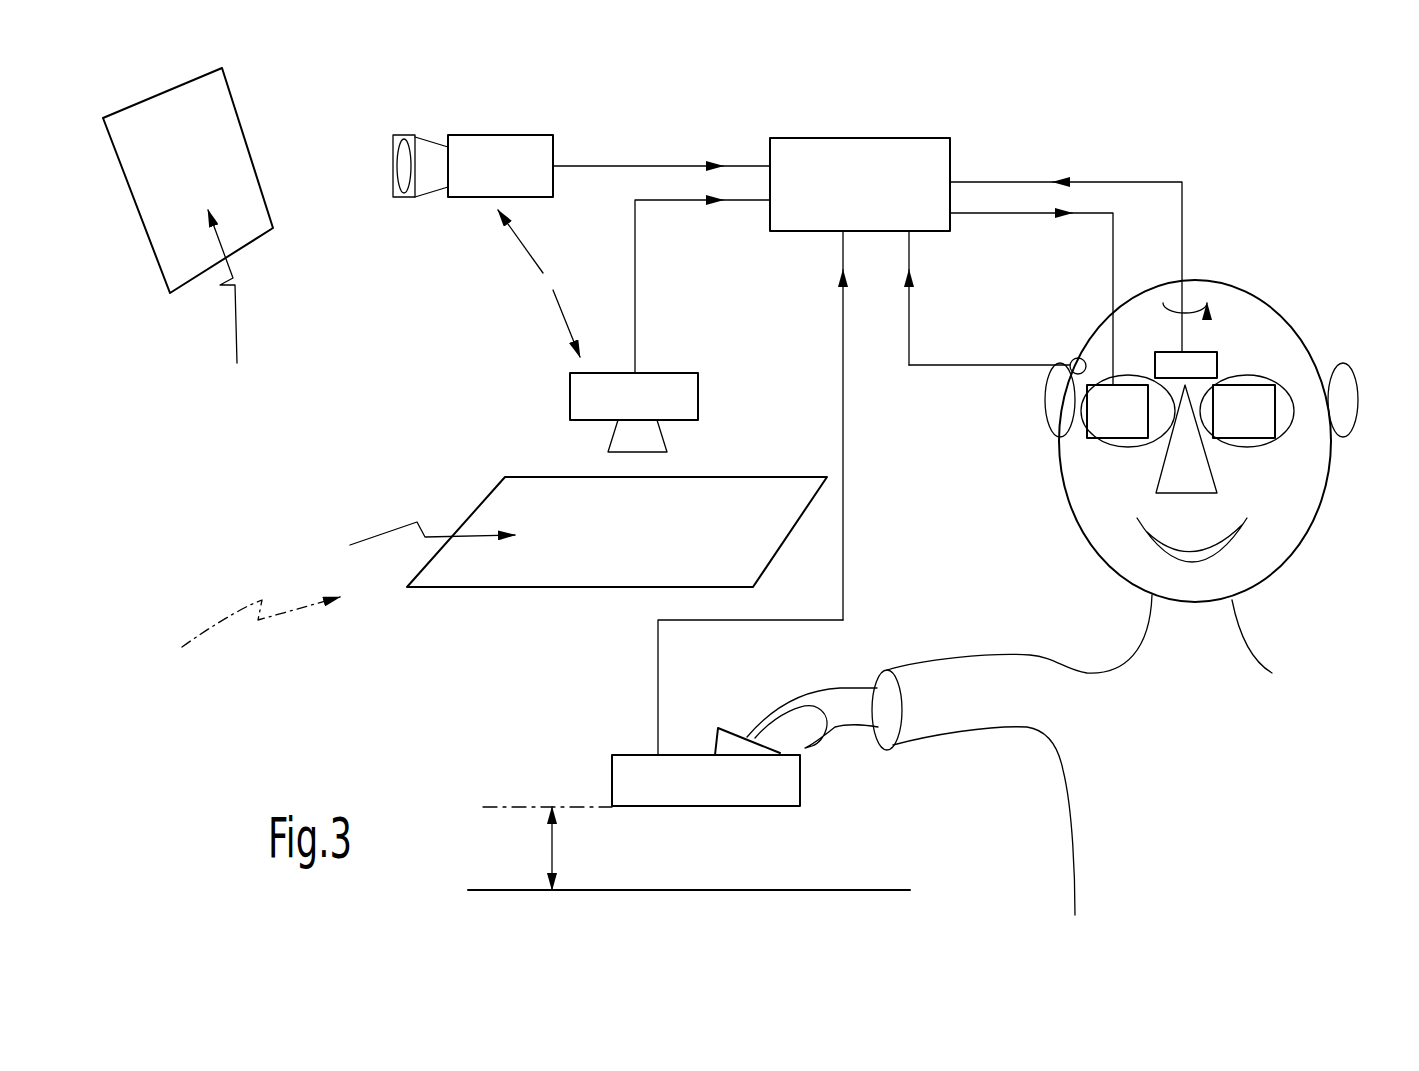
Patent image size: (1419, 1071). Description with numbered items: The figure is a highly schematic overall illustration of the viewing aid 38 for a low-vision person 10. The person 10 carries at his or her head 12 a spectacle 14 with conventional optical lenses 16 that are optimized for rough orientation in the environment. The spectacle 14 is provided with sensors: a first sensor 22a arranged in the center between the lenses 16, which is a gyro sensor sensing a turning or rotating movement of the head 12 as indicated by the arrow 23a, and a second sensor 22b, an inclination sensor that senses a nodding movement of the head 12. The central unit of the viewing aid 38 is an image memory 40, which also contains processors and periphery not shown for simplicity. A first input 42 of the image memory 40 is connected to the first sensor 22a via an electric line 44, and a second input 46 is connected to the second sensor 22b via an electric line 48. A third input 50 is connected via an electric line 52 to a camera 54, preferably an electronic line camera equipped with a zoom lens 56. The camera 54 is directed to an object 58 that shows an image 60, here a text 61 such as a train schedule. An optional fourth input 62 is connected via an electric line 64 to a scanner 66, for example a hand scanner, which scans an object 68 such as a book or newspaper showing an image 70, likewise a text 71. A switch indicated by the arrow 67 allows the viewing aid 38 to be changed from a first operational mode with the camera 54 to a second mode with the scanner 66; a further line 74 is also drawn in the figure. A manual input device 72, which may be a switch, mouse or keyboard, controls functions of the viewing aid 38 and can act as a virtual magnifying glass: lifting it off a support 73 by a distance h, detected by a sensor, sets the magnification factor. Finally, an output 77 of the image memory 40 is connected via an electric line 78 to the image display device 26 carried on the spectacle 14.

The low-vision person 10 is at (1278, 725).
The head 12 is at (1220, 292).
The spectacle 14 is at (1336, 354).
The optical lenses 16 is at (1130, 432).
The first sensor 22a is at (1212, 347).
The second sensor 22b is at (1077, 357).
The arrow 23a is at (1163, 307).
The image display device 26 is at (1102, 420).
The viewing aid 38 is at (248, 640).
The image memory 40 is at (897, 158).
The first input 42 is at (950, 180).
The electric line 44 is at (1140, 181).
The second input 46 is at (918, 233).
The electric line 48 is at (950, 367).
The third input 50 is at (770, 165).
The electric line 52 is at (638, 166).
The camera 54 is at (507, 148).
The zoom lens 56 is at (423, 153).
The object 58 is at (222, 118).
The image 60 is at (232, 302).
The text 61 is at (152, 222).
The fourth input 62 is at (770, 207).
The electric line 64 is at (635, 288).
The scanner 66 is at (690, 392).
The arrow 67 is at (548, 280).
The object 68 is at (515, 495).
The image 70 is at (411, 540).
The text 71 is at (555, 565).
The manual input device 72 is at (700, 785).
The support 73 is at (820, 890).
The signal line 74 is at (843, 448).
The output 77 is at (950, 217).
The electric line 78 is at (1113, 255).